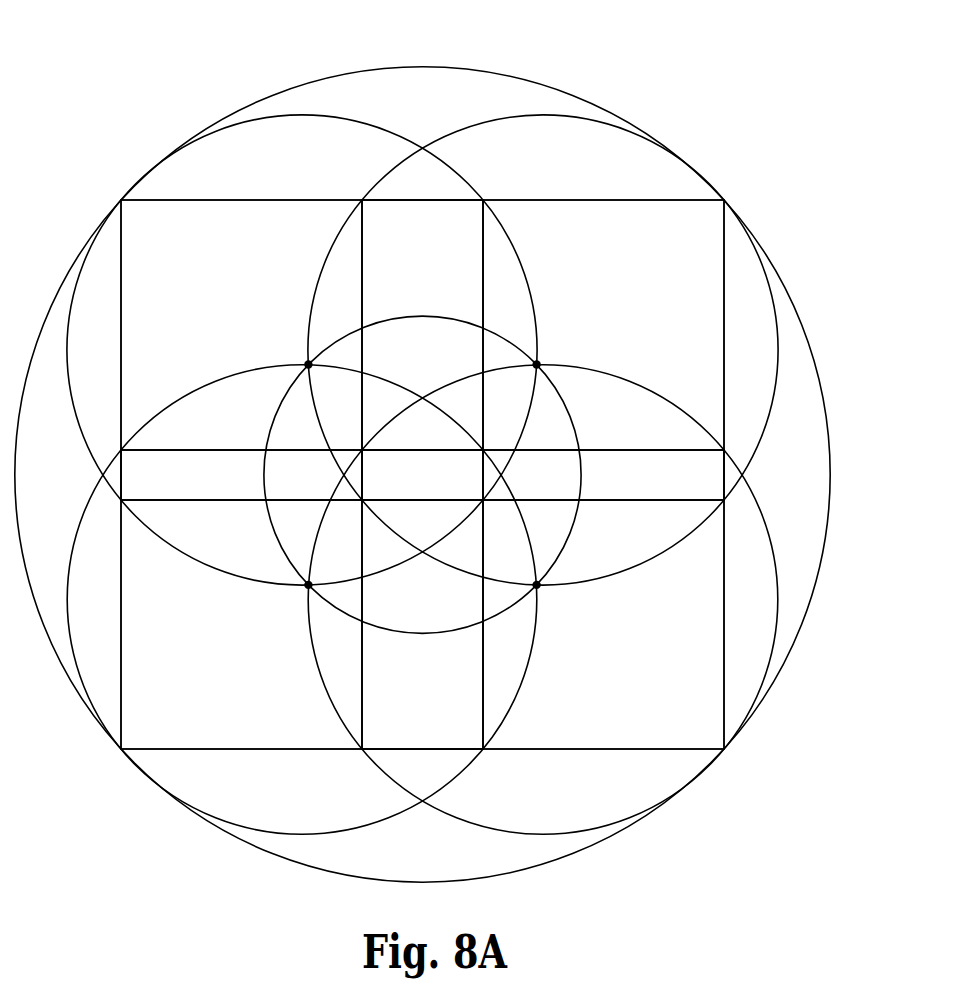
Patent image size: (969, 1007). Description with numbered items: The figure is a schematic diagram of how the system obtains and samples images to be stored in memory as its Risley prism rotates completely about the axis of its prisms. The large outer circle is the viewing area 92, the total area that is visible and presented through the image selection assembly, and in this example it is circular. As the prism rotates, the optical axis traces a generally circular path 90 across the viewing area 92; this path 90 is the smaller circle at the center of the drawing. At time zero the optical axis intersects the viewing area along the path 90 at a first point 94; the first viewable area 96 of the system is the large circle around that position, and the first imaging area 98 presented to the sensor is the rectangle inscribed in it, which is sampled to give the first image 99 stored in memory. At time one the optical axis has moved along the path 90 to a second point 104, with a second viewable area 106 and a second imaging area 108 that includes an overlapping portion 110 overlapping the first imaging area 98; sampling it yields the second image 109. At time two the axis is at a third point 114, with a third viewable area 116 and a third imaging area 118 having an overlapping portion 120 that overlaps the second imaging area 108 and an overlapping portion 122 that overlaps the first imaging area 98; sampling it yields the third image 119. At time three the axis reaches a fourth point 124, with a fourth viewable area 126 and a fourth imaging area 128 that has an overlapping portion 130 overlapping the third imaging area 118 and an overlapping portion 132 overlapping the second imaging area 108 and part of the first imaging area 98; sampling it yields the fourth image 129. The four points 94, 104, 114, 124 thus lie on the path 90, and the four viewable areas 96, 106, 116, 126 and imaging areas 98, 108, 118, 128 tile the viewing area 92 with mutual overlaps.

The path 90 is at (338, 328).
The viewing area 92 is at (448, 65).
The first point 94 is at (308, 365).
The first viewable area 96 is at (357, 117).
The first imaging area 98 is at (318, 203).
The first image 99 is at (176, 281).
The second point 104 is at (537, 365).
The second viewable area 106 is at (547, 115).
The second imaging area 108 is at (364, 249).
The second image 109 is at (613, 289).
The overlapping portion 110 is at (416, 295).
The third point 114 is at (537, 586).
The third viewable area 116 is at (554, 836).
The third imaging area 118 is at (538, 452).
The third image 119 is at (595, 549).
The overlapping portion 120 is at (590, 483).
The overlapping portion 122 is at (387, 489).
The fourth point 124 is at (308, 586).
The fourth viewable area 126 is at (262, 836).
The fourth imaging area 128 is at (296, 451).
The fourth image 129 is at (176, 674).
The overlapping portion 130 is at (373, 693).
The overlapping portion 132 is at (140, 485).